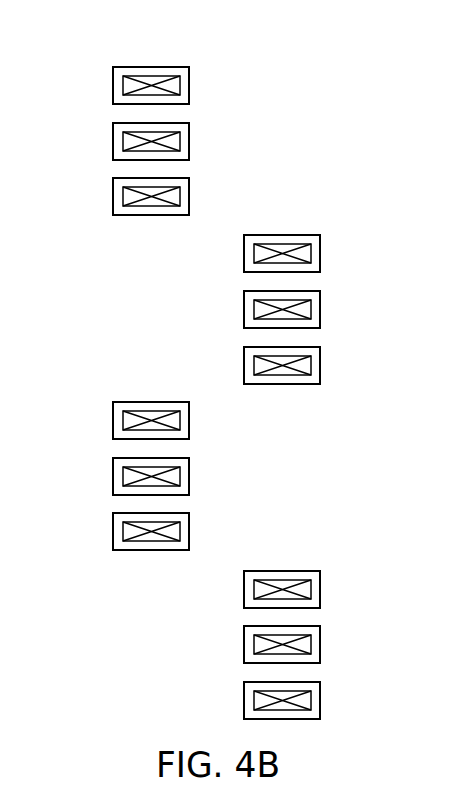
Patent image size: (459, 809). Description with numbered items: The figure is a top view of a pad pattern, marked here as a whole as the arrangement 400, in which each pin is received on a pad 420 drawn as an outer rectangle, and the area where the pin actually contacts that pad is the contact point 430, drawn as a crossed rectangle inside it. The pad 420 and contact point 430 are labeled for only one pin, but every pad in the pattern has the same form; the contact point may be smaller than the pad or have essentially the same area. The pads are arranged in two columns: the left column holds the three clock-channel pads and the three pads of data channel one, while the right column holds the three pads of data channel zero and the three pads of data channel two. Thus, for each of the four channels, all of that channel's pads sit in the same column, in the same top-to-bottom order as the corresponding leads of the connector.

The pad arrangement of connector 400 is at (217, 367).
The pad 420 is at (162, 67).
The contact point 430 is at (142, 75).